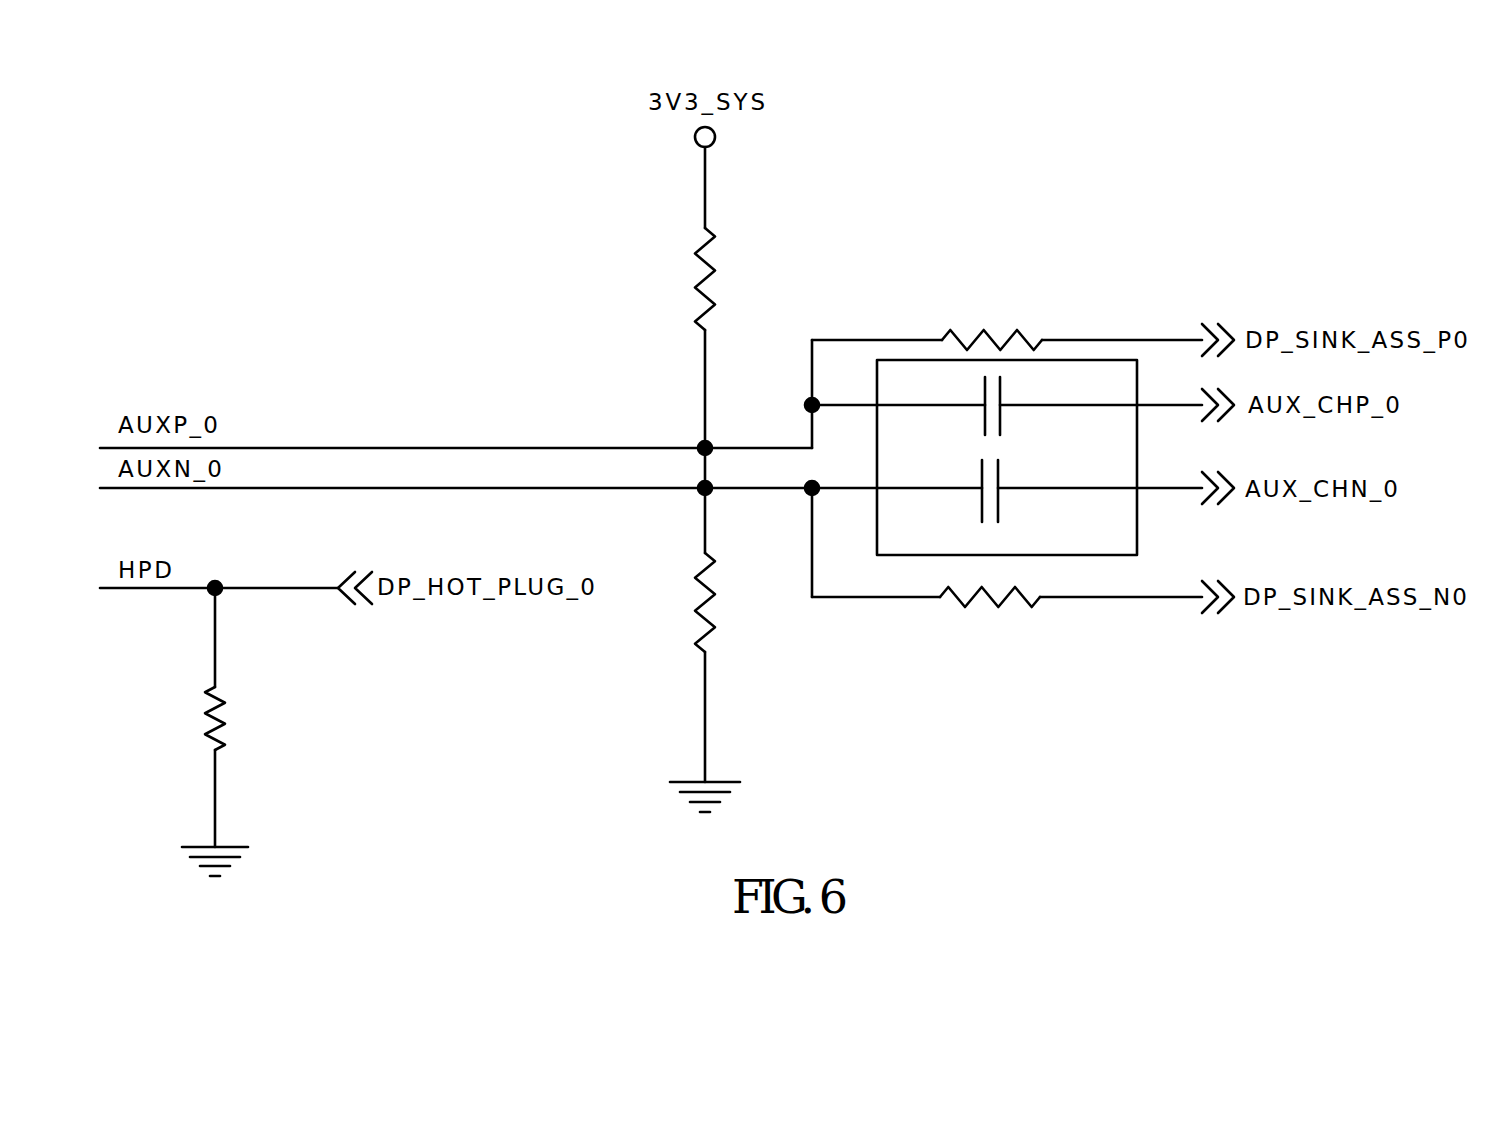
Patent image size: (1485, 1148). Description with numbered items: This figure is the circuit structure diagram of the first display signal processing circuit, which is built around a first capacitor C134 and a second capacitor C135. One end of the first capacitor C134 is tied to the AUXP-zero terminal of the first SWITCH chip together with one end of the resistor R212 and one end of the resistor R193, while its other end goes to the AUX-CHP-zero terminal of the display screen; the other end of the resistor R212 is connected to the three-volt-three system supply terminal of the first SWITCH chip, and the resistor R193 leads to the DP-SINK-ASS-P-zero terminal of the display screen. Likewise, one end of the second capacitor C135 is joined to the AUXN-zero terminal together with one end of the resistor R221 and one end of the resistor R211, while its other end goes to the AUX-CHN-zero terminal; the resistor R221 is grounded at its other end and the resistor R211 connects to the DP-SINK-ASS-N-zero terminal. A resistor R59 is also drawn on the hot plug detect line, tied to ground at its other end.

The resistor R212 is at (670, 279).
The resistor R221 is at (738, 602).
The series resistor 1K R193 is at (970, 331).
The resistor R211 is at (969, 588).
The first capacitor C134 is at (990, 406).
The second capacitor C135 is at (989, 491).
The hot plug detect pull-down resistor 100K R59 is at (251, 718).